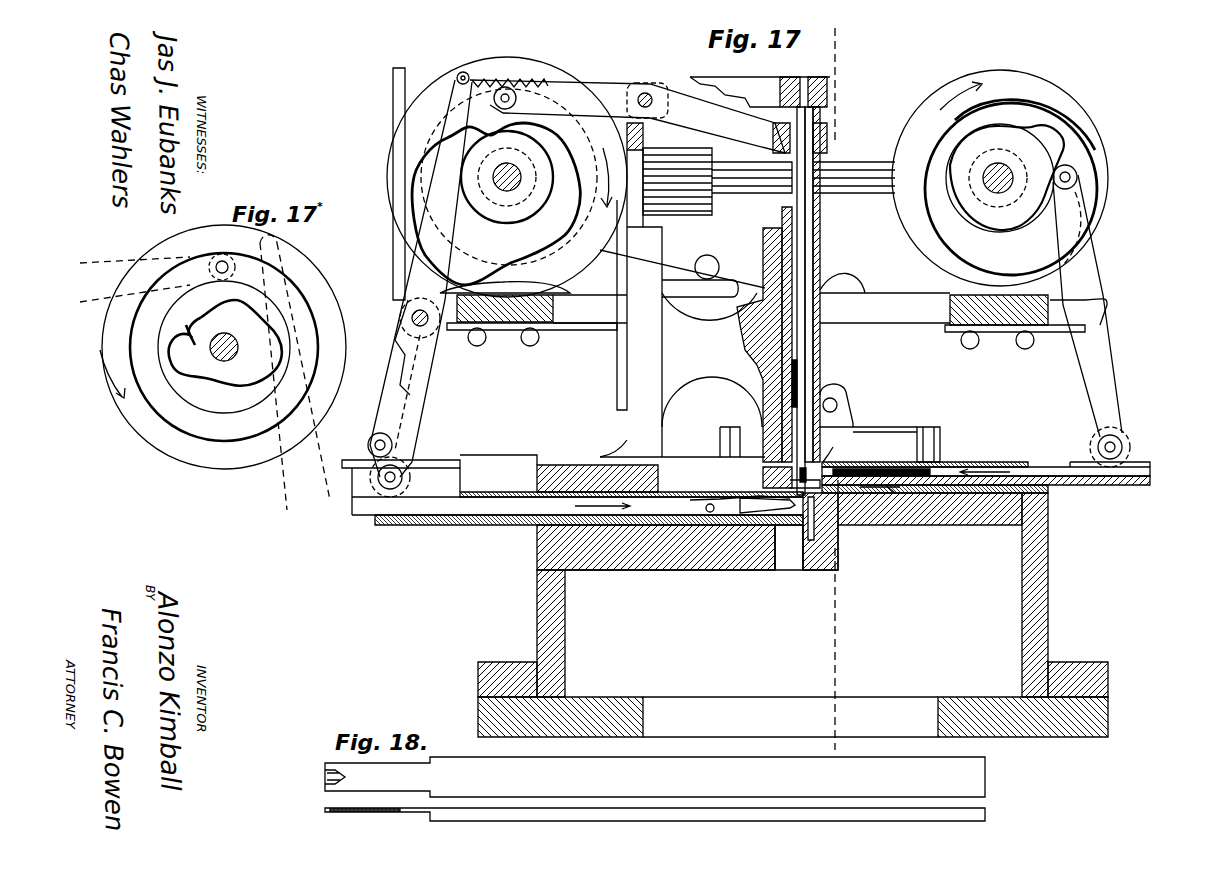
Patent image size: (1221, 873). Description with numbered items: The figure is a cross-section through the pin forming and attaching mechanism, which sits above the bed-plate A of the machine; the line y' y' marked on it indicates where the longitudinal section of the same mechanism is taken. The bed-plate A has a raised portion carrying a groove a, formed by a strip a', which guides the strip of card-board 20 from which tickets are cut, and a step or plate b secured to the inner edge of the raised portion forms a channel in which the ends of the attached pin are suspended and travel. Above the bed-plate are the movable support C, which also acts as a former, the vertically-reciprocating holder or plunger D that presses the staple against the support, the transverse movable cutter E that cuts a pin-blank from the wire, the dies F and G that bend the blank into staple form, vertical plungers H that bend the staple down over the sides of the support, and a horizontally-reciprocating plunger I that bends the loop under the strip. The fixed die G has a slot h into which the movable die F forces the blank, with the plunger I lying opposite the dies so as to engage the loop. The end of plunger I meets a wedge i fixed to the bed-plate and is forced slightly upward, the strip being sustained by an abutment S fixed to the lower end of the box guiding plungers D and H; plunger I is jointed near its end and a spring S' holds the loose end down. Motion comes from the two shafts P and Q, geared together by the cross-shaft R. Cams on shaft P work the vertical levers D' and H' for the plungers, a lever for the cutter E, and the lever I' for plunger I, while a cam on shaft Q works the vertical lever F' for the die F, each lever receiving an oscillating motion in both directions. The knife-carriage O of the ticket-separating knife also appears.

In FIG. 17, the bed-plate A is at (793, 615).
In FIG. 17, the horizontally-reciprocating plunger I is at (576, 547).
In FIG. 17, the wedge i is at (789, 547).
In FIG. 17, the step or plate b is at (805, 575).
In FIG. 17, the movable transverse cutter E is at (428, 462).
In FIG. 17, the lever I' is at (418, 392).
In FIG. 17, the vertical lever H' is at (648, 153).
In FIG. 17, the vertically-reciprocating plunger H is at (837, 284).
In FIG. 17, the vertically-reciprocating holder or plunger D is at (790, 301).
In FIG. 17, the vertical lever D' is at (760, 92).
In FIG. 17, the shaft P is at (507, 177).
The shaft P is at (231, 347).
In FIG. 17, the shaft Q is at (1005, 178).
In FIG. 17, the cross-shaft R is at (745, 182).
In FIG. 17, the fixed die G is at (840, 420).
In FIG. 17, the movable support C is at (826, 460).
In FIG. 17, the slot or recess h is at (829, 447).
In FIG. 17, the movable die F is at (996, 458).
In FIG. 18, the movable die F is at (655, 790).
In FIG. 17, the vertical lever F' is at (1100, 316).
In FIG. 17, the knife-carriage O is at (935, 440).
In FIG. 17, the abutment S is at (767, 495).
In FIG. 17, the spring S' is at (740, 494).
In FIG. 17, the strip of card-board 20 is at (843, 497).
In FIG. 17, the groove a is at (880, 525).
In FIG. 17, the strip a' is at (887, 514).
In FIG. 17, the section line y' is at (837, 392).